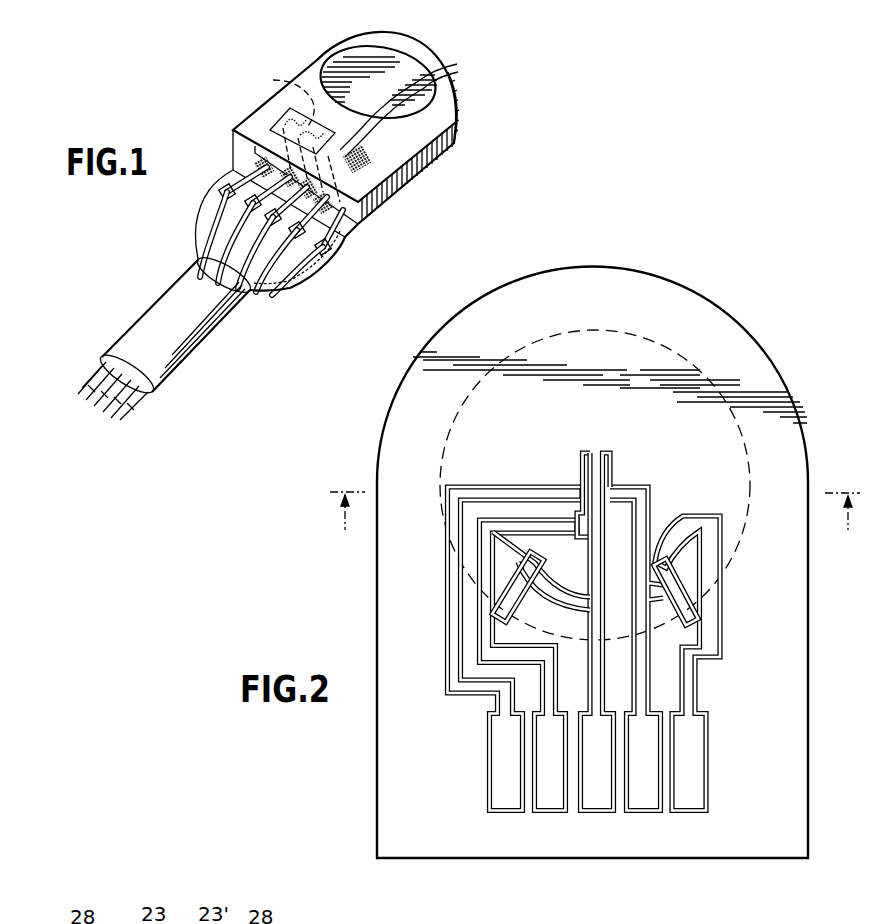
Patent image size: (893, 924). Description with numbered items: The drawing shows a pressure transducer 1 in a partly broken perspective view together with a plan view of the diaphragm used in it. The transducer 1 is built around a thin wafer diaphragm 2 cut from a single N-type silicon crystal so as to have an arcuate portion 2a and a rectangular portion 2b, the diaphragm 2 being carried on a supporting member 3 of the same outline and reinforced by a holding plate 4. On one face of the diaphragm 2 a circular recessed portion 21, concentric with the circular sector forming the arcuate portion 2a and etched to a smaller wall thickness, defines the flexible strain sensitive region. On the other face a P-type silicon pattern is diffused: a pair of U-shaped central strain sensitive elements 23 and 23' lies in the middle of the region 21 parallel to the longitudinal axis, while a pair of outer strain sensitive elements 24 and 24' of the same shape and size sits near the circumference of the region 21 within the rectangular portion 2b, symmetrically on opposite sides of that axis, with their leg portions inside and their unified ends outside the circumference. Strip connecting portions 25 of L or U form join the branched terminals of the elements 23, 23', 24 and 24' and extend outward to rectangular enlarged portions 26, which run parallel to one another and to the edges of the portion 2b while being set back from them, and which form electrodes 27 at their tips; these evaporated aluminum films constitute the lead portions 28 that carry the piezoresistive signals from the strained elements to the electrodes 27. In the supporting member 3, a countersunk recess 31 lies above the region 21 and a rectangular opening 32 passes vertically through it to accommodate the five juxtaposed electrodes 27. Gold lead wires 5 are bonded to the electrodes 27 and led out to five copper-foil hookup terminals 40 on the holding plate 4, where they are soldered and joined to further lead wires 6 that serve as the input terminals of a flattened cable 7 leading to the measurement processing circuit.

In FIG. 1, the pressure transducer 1 is at (402, 177).
In FIG. 1, the diaphragm 2 is at (428, 58).
In FIG. 2, the diaphragm 2 is at (790, 776).
In FIG. 2, the arcuate portion 2a is at (742, 332).
In FIG. 2, the rectangular portion 2b is at (375, 790).
In FIG. 1, the supporting member 3 is at (423, 125).
In FIG. 1, the holding plate 4 is at (296, 296).
In FIG. 1, the lead wires (gold wires) 5 is at (237, 174).
In FIG. 1, the lead wires 6 is at (212, 230).
In FIG. 1, the cable 7 is at (176, 349).
In FIG. 1, the recessed portion (strain sensitive region) 21 is at (340, 70).
In FIG. 2, the recessed portion (strain sensitive region) 21 is at (656, 324).
In FIG. 2, the central strain sensitive element 23 is at (573, 628).
In FIG. 2, the central strain sensitive element 23' is at (635, 458).
In FIG. 2, the outer strain sensitive element 24 is at (477, 588).
In FIG. 2, the outer strain sensitive element 24' is at (708, 604).
In FIG. 2, the strip connecting portion 25 is at (552, 594).
In FIG. 2, the rectangular enlarged portion 26 is at (704, 770).
In FIG. 1, the electrode 27 is at (283, 90).
In FIG. 2, the electrode 27 is at (494, 762).
In FIG. 2, the lead portion 28 is at (493, 494).
In FIG. 1, the countersunk recess 31 is at (428, 93).
In FIG. 1, the rectangular opening 32 is at (268, 124).
In FIG. 1, the hookup terminal 40 is at (332, 248).